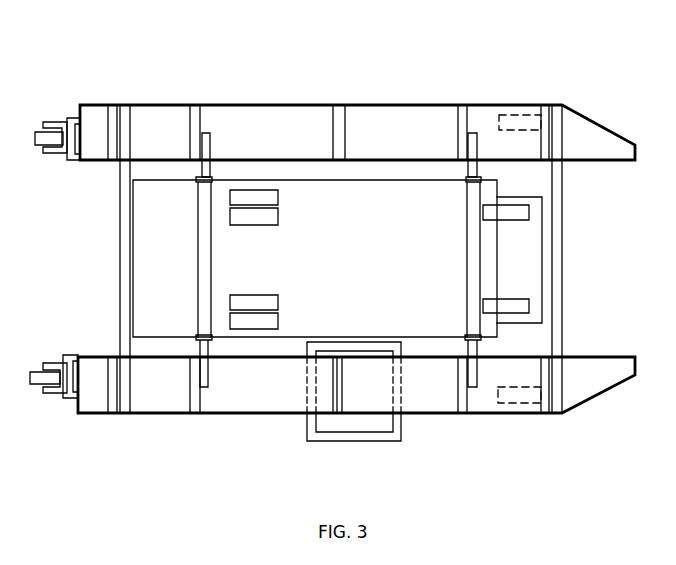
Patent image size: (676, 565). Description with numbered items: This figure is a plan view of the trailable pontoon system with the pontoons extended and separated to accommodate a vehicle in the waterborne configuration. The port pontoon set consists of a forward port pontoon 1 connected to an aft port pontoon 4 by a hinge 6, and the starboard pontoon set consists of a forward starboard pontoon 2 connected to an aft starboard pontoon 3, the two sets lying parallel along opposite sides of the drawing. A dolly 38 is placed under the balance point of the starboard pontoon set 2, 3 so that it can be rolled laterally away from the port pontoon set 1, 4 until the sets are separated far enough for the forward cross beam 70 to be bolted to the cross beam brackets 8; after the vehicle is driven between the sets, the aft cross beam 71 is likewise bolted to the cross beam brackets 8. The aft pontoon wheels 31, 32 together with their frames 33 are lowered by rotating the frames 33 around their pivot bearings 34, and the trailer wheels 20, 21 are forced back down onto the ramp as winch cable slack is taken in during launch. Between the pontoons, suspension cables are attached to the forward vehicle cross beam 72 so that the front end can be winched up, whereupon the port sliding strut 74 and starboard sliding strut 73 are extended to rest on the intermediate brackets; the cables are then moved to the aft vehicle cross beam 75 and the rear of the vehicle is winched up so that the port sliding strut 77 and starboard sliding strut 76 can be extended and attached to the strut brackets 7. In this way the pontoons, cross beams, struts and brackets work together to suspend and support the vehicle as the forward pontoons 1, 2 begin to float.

The forward port pontoon 1 is at (590, 143).
The forward starboard pontoon 2 is at (588, 375).
The aft starboard pontoon 3 is at (257, 391).
The aft port pontoon 4 is at (288, 128).
The hinge 6 is at (343, 113).
The strut brackets 7 is at (197, 114).
The cross beam brackets 8 is at (113, 112).
The trailer wheel 20 is at (522, 122).
The trailer wheel 21 is at (515, 393).
The aft pontoon wheel 31 is at (37, 378).
The aft pontoon wheel 32 is at (42, 136).
The frames 33 is at (57, 155).
The pivot bearings 34 is at (78, 162).
The dolly 38 is at (314, 428).
The forward cross beam 70 is at (557, 280).
The aft cross beam 71 is at (125, 123).
The forward vehicle cross beam 72 is at (470, 262).
The starboard sliding strut 73 is at (468, 350).
The port sliding strut 74 is at (470, 166).
The aft vehicle cross beam 75 is at (206, 243).
The starboard sliding strut 76 is at (203, 357).
The port sliding strut 77 is at (208, 143).